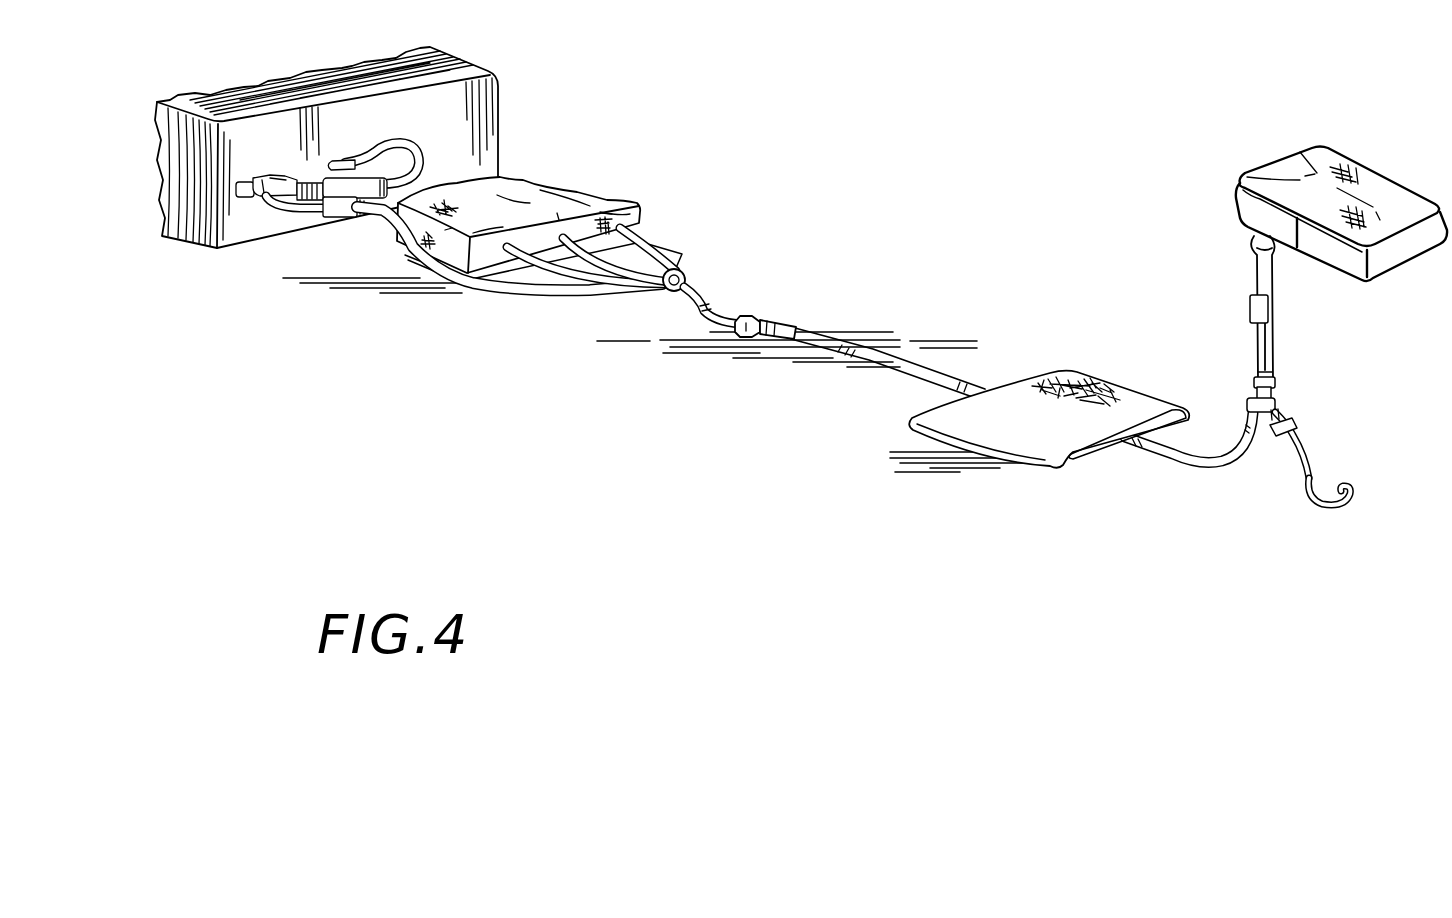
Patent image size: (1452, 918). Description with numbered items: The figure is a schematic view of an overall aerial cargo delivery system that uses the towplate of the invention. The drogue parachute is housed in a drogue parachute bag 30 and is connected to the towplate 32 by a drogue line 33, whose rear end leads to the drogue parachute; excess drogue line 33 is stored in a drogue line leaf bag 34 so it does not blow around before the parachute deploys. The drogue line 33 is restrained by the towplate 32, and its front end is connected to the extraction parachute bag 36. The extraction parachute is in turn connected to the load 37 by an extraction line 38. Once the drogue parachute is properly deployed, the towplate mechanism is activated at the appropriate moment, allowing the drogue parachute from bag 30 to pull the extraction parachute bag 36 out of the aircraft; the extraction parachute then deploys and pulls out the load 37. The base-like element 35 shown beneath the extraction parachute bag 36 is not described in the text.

The drogue parachute bag 30 is at (1327, 133).
The towplate 32 is at (814, 325).
The drogue line 33 is at (958, 377).
The drogue line leaf bag 34 is at (1060, 472).
The base plate 35 is at (482, 306).
The extraction parachute bag 36 is at (570, 175).
The load 37 is at (493, 72).
The extraction line 38 is at (367, 220).